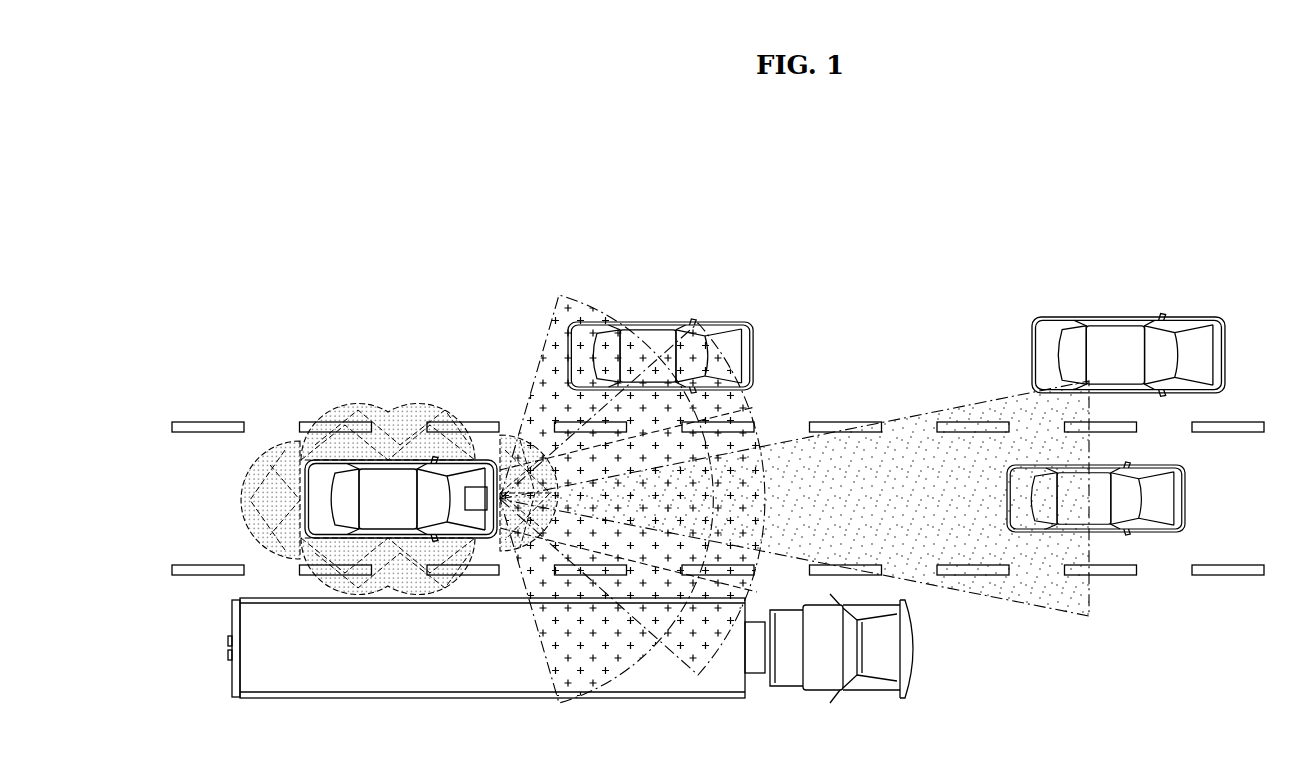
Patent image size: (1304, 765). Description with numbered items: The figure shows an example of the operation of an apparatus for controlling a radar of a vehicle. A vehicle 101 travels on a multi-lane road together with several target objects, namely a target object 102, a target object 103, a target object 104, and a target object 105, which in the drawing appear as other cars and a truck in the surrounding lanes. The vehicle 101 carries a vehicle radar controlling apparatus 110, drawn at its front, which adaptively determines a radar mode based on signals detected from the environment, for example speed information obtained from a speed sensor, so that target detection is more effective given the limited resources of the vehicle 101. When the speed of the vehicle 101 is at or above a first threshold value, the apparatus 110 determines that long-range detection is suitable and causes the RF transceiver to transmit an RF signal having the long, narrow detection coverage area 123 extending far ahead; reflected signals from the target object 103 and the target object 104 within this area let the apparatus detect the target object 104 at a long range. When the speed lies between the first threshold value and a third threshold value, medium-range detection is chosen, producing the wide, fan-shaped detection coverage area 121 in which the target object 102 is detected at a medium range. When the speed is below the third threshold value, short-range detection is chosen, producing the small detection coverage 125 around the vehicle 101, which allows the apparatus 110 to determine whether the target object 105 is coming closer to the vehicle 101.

The vehicle 101 is at (470, 461).
The target object 102 is at (733, 332).
The target object 103 is at (1198, 330).
The target object 104 is at (1180, 497).
The target object 105 is at (920, 647).
The vehicle radar controlling apparatus 110 is at (488, 512).
The detection coverage area 121 is at (545, 355).
The detection coverage area 123 is at (918, 412).
The detection coverage 125 is at (278, 428).